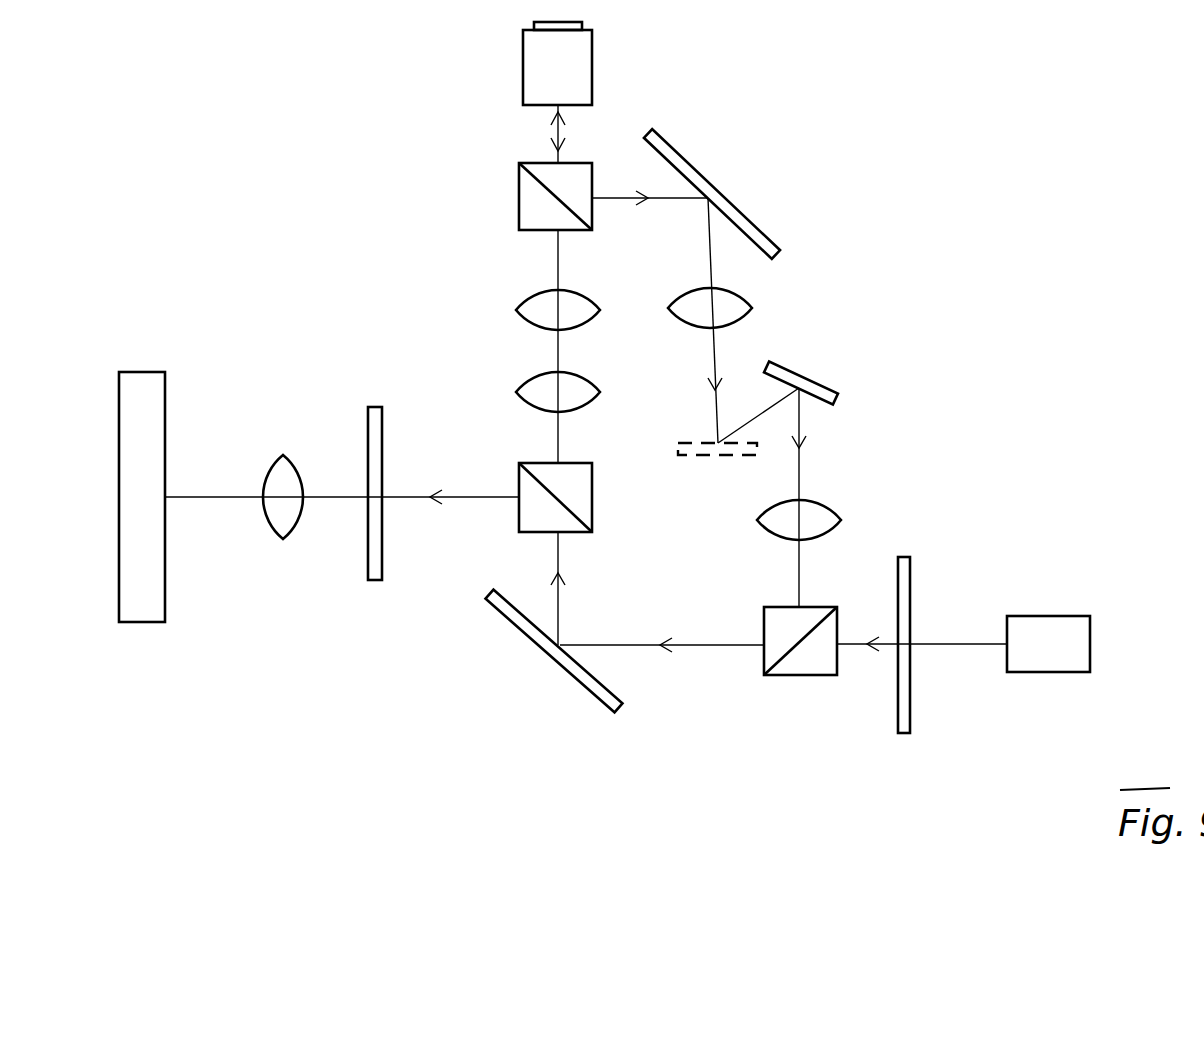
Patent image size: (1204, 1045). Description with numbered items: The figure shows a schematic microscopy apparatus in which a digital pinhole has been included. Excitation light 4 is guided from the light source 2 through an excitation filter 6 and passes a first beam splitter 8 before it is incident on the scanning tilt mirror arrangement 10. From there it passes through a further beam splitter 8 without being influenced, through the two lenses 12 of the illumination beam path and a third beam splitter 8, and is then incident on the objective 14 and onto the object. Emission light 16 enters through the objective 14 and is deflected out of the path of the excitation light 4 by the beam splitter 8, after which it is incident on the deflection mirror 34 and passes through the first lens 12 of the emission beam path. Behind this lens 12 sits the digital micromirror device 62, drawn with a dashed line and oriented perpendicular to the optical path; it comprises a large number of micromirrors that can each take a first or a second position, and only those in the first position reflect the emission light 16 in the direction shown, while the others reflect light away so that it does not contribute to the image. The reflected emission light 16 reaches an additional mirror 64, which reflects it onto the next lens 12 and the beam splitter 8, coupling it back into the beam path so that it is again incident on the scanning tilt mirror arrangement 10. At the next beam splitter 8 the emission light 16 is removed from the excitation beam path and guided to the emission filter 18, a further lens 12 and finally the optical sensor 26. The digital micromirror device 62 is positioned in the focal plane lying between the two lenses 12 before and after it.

The light source 2 is at (1058, 638).
The excitation light 4 is at (858, 646).
The excitation filter 6 is at (910, 597).
The beam splitter 8 is at (577, 157).
The scanning tilt mirror arrangement 10 is at (573, 680).
The lens 12 is at (520, 327).
The objective 14 is at (566, 78).
The emission light 16 is at (620, 205).
The emission filter 18 is at (375, 405).
The optical sensor 26 is at (165, 370).
The deflection mirror 34 is at (750, 206).
The digital micromirror device 62 is at (705, 458).
The additional mirror 64 is at (828, 390).